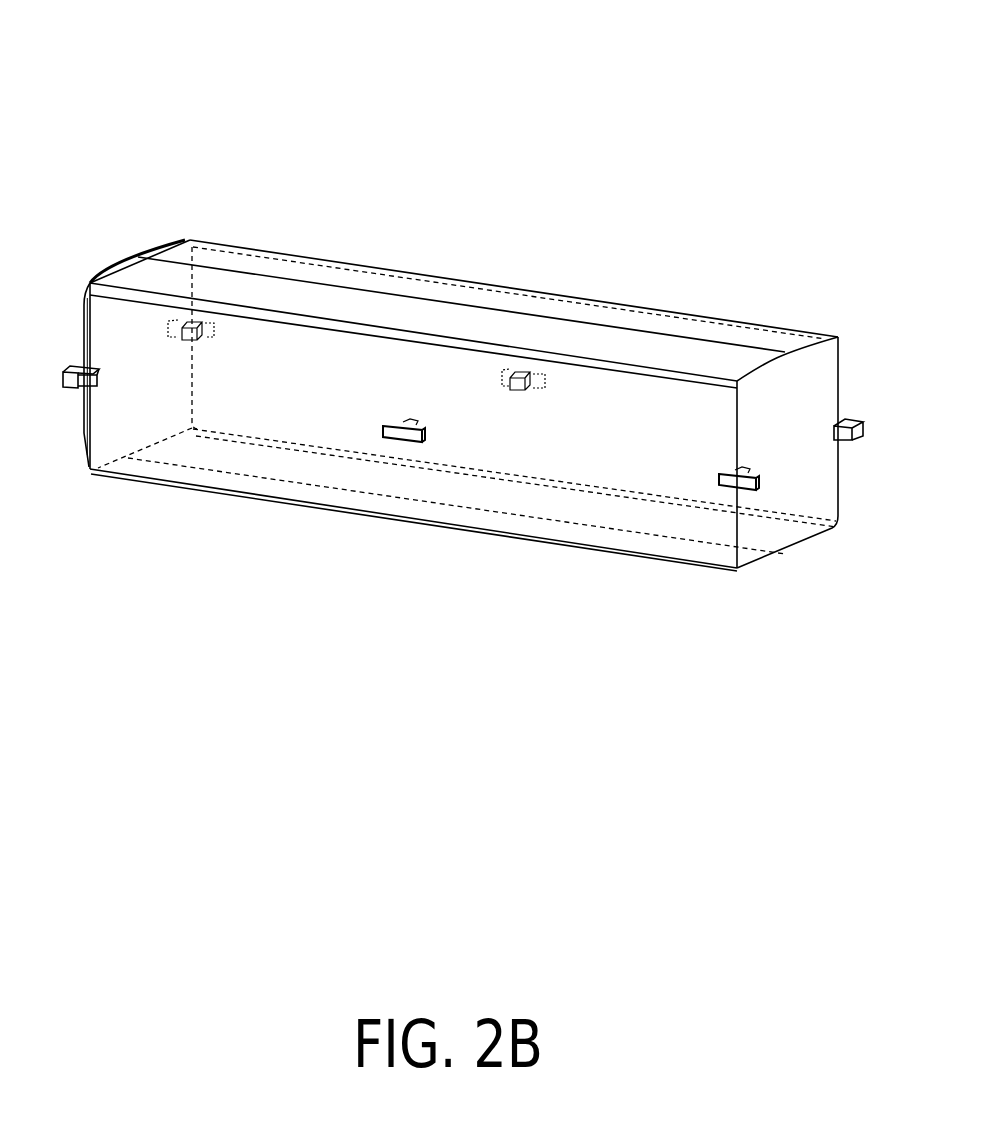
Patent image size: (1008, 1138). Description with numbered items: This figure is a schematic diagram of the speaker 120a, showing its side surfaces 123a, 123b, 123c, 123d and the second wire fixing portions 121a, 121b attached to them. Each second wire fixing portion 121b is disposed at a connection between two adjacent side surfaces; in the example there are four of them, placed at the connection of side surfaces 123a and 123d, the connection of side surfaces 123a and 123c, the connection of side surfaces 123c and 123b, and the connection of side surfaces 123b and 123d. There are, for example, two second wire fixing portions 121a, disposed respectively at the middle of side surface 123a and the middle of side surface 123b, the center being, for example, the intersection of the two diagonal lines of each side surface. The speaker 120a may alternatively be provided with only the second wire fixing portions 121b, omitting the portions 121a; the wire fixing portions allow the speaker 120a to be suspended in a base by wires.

The speaker 120a is at (138, 40).
The second wire fixing portion 121a is at (520, 366).
The second wire fixing portion 121b is at (205, 330).
The side surface 123a is at (283, 461).
The side surface 123b is at (738, 310).
The side surface 123c is at (795, 532).
The side surface 123d is at (178, 232).